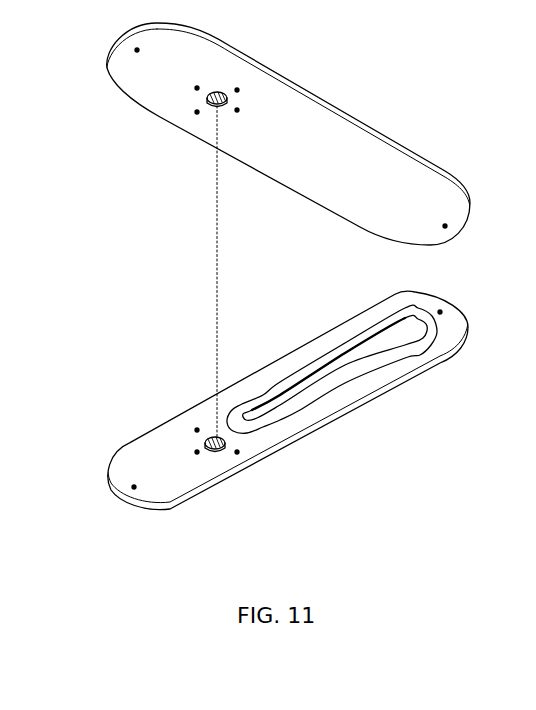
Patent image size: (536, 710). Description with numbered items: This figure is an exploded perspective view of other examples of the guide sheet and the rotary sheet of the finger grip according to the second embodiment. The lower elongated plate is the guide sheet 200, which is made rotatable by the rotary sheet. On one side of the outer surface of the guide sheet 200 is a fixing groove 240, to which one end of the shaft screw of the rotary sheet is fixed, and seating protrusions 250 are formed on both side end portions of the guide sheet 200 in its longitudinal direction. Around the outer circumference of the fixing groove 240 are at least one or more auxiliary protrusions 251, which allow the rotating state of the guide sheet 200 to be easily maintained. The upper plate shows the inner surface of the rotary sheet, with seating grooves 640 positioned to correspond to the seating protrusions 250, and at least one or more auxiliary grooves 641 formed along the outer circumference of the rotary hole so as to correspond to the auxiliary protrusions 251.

The seating grooves 640 is at (128, 44).
The auxiliary grooves 641 is at (192, 116).
The guide sheet 200 is at (323, 410).
The fixing groove 240 is at (223, 451).
The auxiliary protrusions 251 is at (195, 427).
The seating protrusions 250 is at (132, 485).